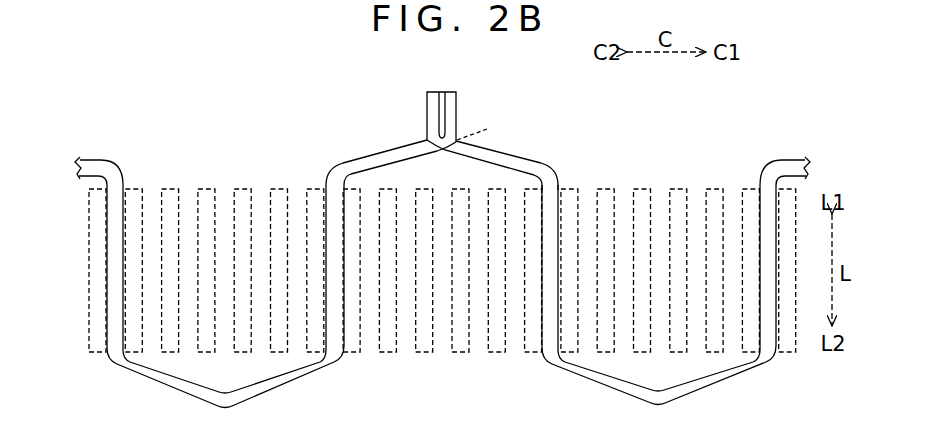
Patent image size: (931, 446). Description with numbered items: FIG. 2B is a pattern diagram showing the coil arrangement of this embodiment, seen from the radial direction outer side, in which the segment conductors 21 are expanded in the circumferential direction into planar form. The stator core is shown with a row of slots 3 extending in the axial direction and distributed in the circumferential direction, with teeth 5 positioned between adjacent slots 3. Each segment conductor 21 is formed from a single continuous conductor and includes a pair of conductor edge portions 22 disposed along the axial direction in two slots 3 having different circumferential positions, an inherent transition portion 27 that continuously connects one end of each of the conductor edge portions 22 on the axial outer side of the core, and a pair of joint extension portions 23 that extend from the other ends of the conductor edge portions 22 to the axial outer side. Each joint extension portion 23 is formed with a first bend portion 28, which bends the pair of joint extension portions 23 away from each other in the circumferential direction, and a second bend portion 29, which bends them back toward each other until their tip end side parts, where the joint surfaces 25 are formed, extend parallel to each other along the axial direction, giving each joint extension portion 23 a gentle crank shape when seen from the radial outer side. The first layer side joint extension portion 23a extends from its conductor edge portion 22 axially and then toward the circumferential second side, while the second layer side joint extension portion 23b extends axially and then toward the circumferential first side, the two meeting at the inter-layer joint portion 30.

The slot 3 is at (124, 186).
The tooth 5 is at (423, 352).
The segment conductor 21 is at (452, 311).
The conductor edge portion 22 is at (115, 322).
The joint extension portion 23 is at (463, 121).
The first layer side joint extension portion 23a is at (95, 160).
The second layer side joint extension portion 23b is at (358, 159).
The joint surface 25 is at (437, 106).
The inherent transition portion 27 is at (272, 387).
The first bend portion 28 is at (112, 176).
The second bend portion 29 is at (420, 146).
The inter-layer joint portion 30 is at (457, 96).